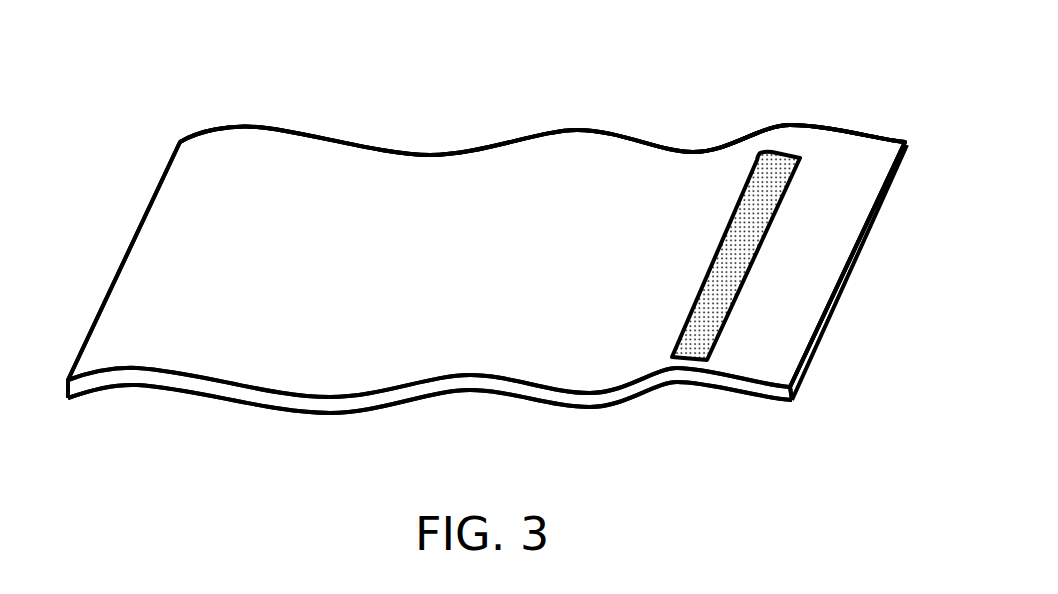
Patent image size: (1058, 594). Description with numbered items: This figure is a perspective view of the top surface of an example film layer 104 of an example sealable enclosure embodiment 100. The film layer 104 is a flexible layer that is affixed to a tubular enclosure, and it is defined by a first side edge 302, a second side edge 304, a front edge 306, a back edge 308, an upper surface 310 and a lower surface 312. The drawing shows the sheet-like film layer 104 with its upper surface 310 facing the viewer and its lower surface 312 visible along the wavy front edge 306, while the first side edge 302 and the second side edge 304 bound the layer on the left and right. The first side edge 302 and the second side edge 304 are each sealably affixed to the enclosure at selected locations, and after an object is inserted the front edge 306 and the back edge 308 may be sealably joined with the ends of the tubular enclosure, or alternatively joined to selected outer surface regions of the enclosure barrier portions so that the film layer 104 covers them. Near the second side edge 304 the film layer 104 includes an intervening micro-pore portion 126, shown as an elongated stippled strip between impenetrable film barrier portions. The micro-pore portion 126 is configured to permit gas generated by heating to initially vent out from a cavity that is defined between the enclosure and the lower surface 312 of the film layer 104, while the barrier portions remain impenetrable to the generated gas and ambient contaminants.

The sealable enclosure embodiment 100 is at (577, 173).
The film layer 104 is at (787, 86).
The micro-pore portion 126 is at (835, 182).
The first side edge 302 is at (132, 243).
The second side edge 304 is at (823, 333).
The front edge 306 is at (438, 383).
The back edge 308 is at (450, 155).
The upper surface 310 is at (317, 217).
The lower surface 312 is at (245, 422).